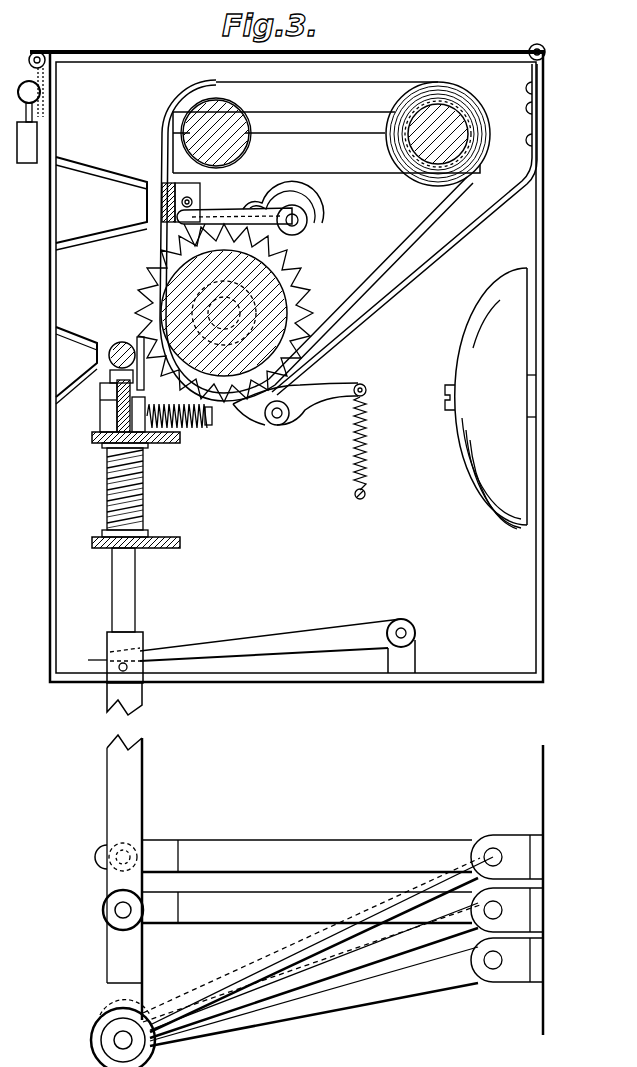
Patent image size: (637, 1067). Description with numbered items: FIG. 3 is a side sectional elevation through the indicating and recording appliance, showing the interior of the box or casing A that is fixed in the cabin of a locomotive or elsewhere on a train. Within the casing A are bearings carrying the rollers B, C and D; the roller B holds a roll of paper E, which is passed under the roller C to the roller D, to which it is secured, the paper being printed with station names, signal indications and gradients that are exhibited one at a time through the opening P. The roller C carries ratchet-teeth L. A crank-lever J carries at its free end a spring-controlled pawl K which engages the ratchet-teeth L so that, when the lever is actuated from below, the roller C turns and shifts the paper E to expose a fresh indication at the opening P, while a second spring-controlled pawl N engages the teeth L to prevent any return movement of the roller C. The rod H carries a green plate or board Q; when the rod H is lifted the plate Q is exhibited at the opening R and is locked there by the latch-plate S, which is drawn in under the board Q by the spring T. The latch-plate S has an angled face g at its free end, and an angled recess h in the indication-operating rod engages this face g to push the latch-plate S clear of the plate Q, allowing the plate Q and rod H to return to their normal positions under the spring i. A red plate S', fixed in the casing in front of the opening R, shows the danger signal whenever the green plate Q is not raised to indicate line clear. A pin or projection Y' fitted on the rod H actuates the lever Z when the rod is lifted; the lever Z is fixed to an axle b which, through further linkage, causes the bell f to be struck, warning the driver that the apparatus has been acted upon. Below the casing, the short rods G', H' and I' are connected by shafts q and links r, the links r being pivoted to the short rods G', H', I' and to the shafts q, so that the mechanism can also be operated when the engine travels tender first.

The box or casing A is at (281, 363).
The opening P is at (101, 203).
The opening R is at (76, 365).
The roller D is at (203, 108).
The paper E is at (173, 131).
The roller B is at (390, 133).
The spring-controlled pawl K is at (219, 222).
The crank-lever J is at (285, 253).
The roller C is at (288, 287).
The ratchet-teeth L is at (160, 297).
The pawl rod S' is at (120, 341).
The angled recess h is at (110, 377).
The latch-plate S is at (104, 415).
The angled face g is at (100, 412).
The spring T is at (198, 430).
The plate or board Q is at (106, 452).
The spring i is at (141, 481).
The rod H is at (115, 807).
The lower mechanism Y' is at (88, 705).
The lever Z is at (213, 645).
The axle b is at (404, 630).
The spring-controlled pawl N is at (320, 398).
The bell f is at (486, 310).
The links r is at (172, 846).
The shafts q is at (494, 852).
The short rod G' is at (318, 941).
The short rod H' is at (314, 965).
The short rod I' is at (314, 996).